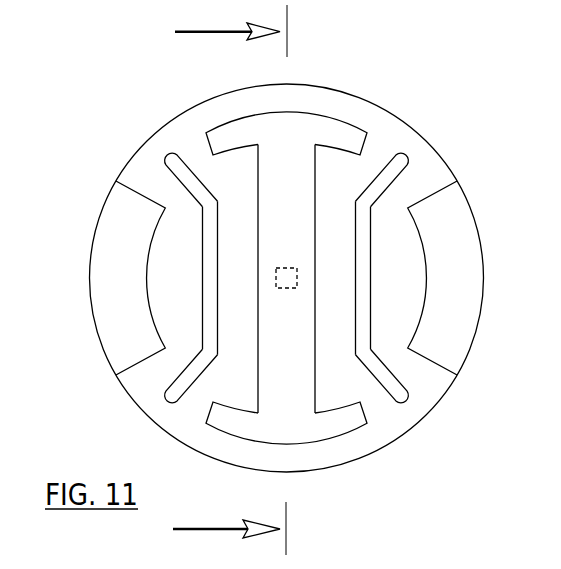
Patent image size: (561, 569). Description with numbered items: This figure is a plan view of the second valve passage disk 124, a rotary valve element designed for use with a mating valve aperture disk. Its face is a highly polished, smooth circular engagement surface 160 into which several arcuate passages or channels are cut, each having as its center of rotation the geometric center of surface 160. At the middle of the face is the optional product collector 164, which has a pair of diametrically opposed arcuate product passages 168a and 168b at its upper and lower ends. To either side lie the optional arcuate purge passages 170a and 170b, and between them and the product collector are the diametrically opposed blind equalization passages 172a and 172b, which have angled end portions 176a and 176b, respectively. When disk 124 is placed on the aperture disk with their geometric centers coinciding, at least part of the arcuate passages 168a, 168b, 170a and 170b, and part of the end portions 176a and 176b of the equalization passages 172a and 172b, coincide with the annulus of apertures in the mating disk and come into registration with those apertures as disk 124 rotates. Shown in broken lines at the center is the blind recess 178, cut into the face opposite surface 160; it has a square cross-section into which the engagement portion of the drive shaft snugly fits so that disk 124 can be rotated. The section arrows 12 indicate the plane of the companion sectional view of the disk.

The section line 12- 12 is at (230, 284).
The valve passage disk 124 is at (407, 127).
The circular engagement surface 160 is at (178, 140).
The product collector 164 is at (300, 226).
The arcuate product passage 168a is at (315, 140).
The arcuate product passage 168b is at (310, 433).
The arcuate purge passage 170a is at (123, 312).
The arcuate purge passage 170b is at (450, 248).
The blind equalization passage 172a is at (208, 264).
The blind equalization passage 172b is at (370, 262).
The end portion 176a is at (174, 168).
The end portion 176b is at (398, 170).
The blind recess 178 is at (288, 288).